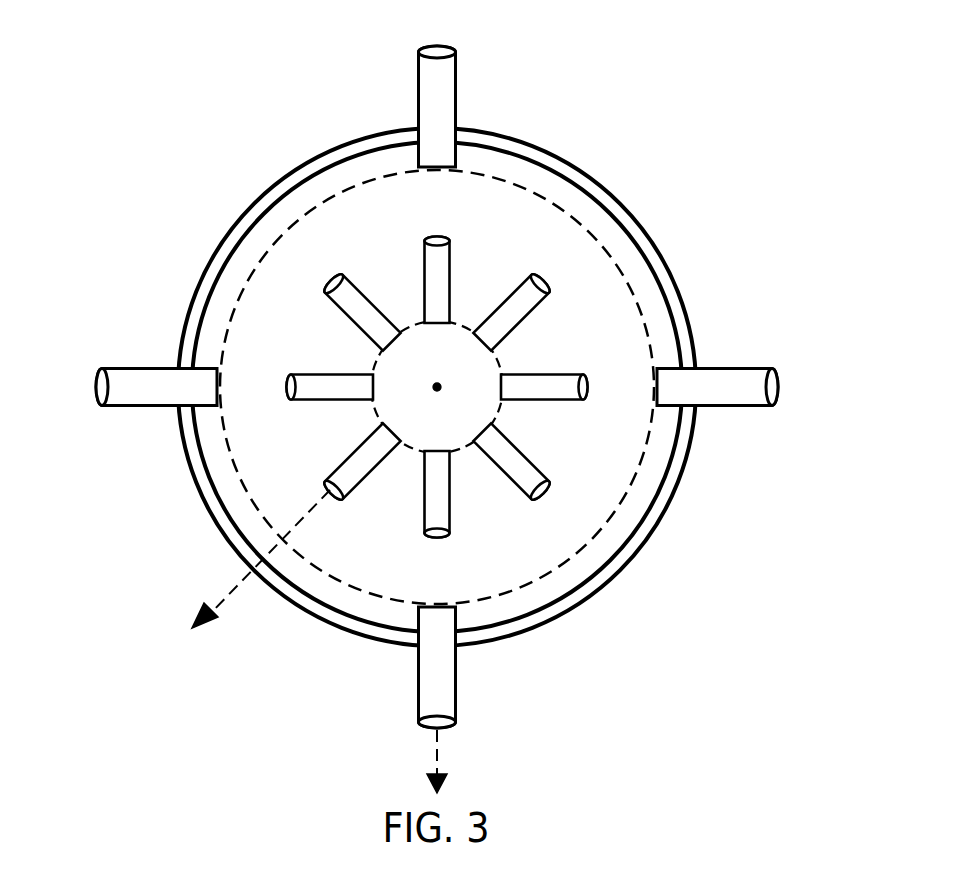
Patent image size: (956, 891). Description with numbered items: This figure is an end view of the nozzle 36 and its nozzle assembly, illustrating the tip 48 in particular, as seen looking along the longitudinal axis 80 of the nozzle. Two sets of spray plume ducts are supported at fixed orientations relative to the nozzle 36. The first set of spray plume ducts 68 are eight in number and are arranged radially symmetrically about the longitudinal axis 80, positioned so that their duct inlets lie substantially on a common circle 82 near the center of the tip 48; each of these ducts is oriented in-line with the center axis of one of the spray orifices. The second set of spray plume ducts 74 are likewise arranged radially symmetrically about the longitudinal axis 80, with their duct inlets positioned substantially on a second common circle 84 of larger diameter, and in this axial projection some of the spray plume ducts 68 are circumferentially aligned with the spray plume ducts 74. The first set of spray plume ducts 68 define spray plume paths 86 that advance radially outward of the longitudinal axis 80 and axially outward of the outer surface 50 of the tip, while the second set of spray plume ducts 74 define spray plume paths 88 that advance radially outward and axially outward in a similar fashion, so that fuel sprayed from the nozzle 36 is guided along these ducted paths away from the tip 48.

The nozzle 36 is at (586, 138).
The tip 48 is at (660, 220).
The outer surface 50 is at (588, 359).
The first set of spray plume ducts 68 is at (449, 245).
The second set of spray plume ducts 74 is at (455, 90).
The longitudinal axis 80 is at (426, 397).
The common circle 82 is at (455, 322).
The second common circle 84 is at (572, 562).
The spray plume paths 86 is at (233, 588).
The spray plume paths 88 is at (438, 752).